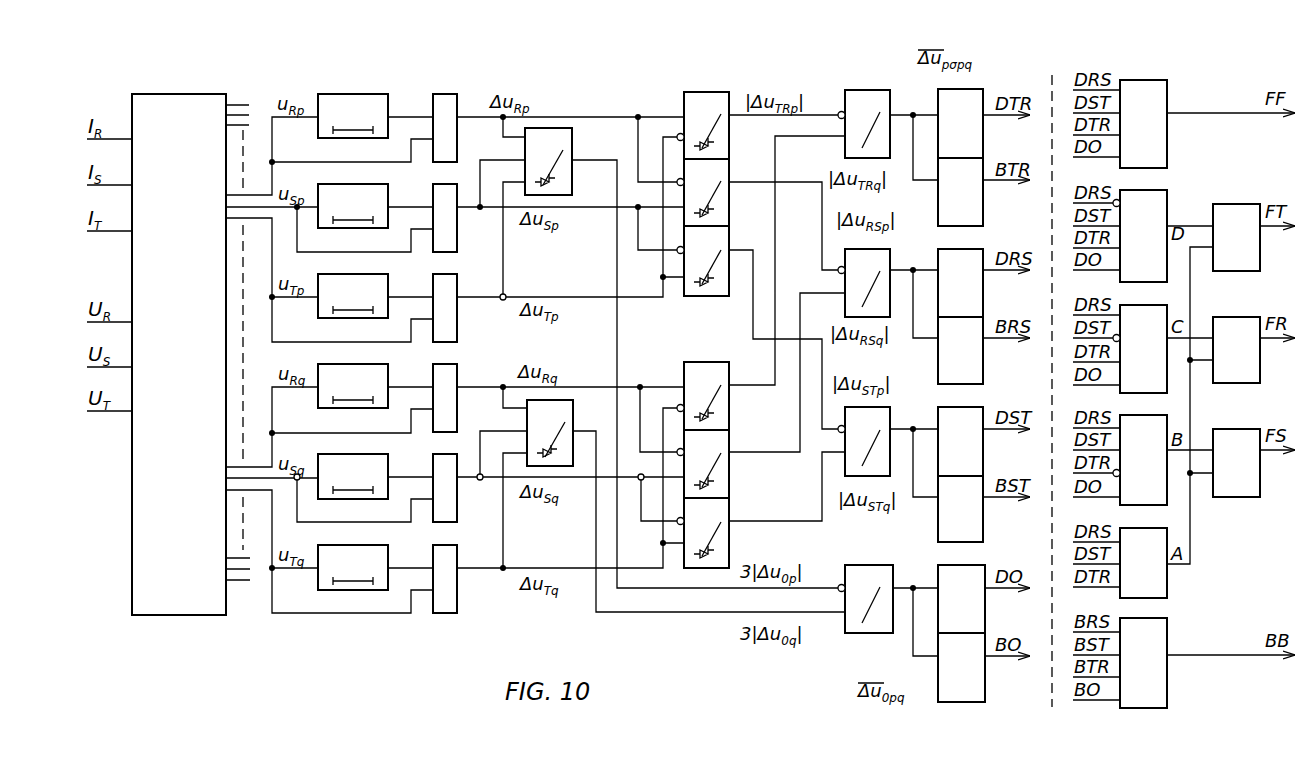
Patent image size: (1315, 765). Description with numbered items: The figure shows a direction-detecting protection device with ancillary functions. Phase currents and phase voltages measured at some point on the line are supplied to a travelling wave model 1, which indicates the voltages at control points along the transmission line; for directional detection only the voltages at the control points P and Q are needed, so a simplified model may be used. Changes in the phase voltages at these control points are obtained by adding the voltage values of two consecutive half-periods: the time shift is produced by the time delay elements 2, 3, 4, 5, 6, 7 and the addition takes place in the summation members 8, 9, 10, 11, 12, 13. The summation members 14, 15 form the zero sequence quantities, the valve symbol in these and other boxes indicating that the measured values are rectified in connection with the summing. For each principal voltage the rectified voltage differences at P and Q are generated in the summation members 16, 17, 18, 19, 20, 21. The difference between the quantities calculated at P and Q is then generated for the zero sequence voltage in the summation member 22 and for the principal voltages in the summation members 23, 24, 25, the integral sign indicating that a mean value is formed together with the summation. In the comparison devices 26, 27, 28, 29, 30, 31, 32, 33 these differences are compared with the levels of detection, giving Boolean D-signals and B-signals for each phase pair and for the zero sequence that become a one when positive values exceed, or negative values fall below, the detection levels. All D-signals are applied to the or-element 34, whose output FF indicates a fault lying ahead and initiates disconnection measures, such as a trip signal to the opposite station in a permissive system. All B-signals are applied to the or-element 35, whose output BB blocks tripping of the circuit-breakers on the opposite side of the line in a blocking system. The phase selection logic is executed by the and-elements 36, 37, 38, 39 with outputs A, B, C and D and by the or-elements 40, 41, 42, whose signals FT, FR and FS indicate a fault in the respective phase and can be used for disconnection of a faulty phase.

The travelling wave model 1 is at (184, 94).
The time delay element 2 is at (362, 94).
The time delay element 3 is at (390, 193).
The time delay element 4 is at (390, 283).
The time delay element 5 is at (390, 373).
The time delay element 6 is at (390, 463).
The time delay element 7 is at (390, 554).
The summation member 8 is at (446, 94).
The summation member 9 is at (458, 228).
The summation member 10 is at (458, 284).
The summation member 11 is at (458, 374).
The summation member 12 is at (458, 492).
The summation member 13 is at (458, 555).
The summation member 14 is at (572, 146).
The summation member 15 is at (573, 413).
The summation member 16 is at (736, 139).
The summation member 17 is at (736, 203).
The summation member 18 is at (707, 296).
The summation member 19 is at (708, 362).
The summation member 20 is at (736, 481).
The summation member 21 is at (736, 550).
The summation member 22 is at (868, 565).
The summation member 23 is at (890, 416).
The summation member 24 is at (890, 257).
The summation member 25 is at (859, 90).
The comparison device 26 is at (983, 140).
The comparison device 27 is at (983, 208).
The comparison device 28 is at (983, 298).
The comparison device 29 is at (983, 366).
The comparison device 30 is at (983, 457).
The comparison device 31 is at (983, 525).
The comparison device 32 is at (985, 612).
The comparison device 33 is at (985, 683).
The or-element 34 is at (1169, 94).
The or-element 35 is at (1169, 640).
The and-element 36 is at (1169, 586).
The and-element 37 is at (1169, 491).
The and-element 38 is at (1169, 379).
The and-element 39 is at (1169, 204).
The or-element 40 is at (1245, 204).
The or-element 41 is at (1245, 317).
The or-element 42 is at (1245, 429).